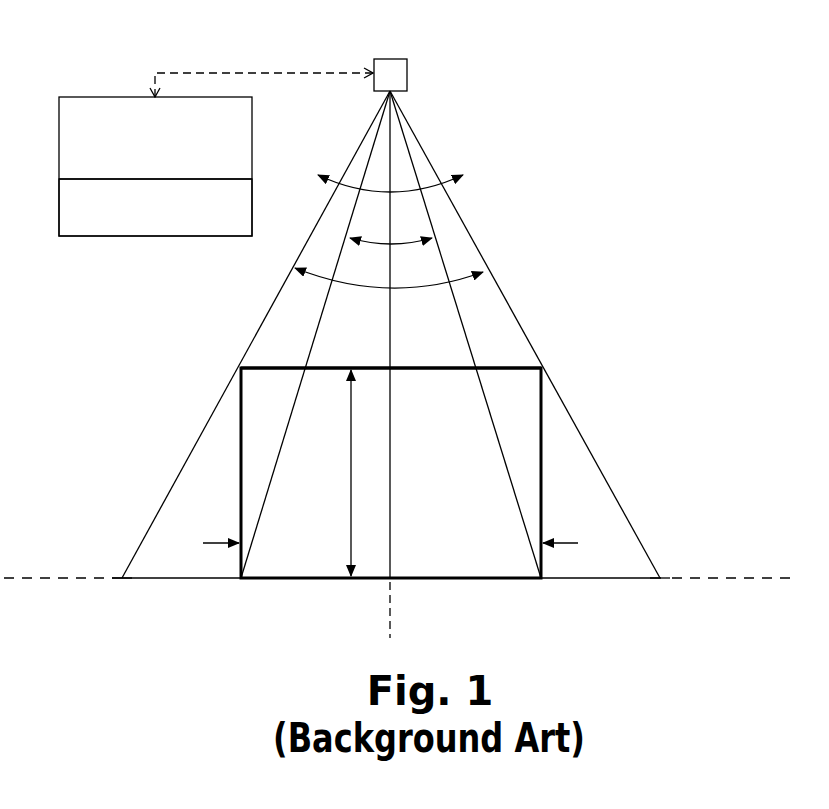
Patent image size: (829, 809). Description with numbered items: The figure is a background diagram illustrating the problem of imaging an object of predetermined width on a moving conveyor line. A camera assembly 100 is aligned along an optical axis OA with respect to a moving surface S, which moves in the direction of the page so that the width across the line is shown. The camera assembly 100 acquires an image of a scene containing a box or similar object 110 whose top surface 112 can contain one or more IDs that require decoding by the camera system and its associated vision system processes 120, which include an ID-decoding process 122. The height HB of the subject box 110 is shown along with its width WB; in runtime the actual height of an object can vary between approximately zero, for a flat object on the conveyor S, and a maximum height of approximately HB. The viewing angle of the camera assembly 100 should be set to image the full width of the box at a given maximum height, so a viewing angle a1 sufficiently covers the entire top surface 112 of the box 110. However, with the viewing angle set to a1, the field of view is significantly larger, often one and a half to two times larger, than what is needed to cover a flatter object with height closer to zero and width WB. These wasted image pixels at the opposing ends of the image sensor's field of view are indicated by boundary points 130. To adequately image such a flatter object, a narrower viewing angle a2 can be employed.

The camera assembly 100 is at (413, 63).
The box 110 is at (523, 452).
The top surface 112 is at (285, 364).
The vision system processes 120 is at (115, 97).
The ID-decoding process 122 is at (108, 237).
The boundary points 130 is at (121, 577).
The moving surface S is at (725, 582).
The optical axis OA is at (391, 538).
The height of the box HB is at (351, 467).
The width of the box WB is at (220, 545).
The viewing angle a1 is at (440, 288).
The viewing angle a2 is at (410, 244).